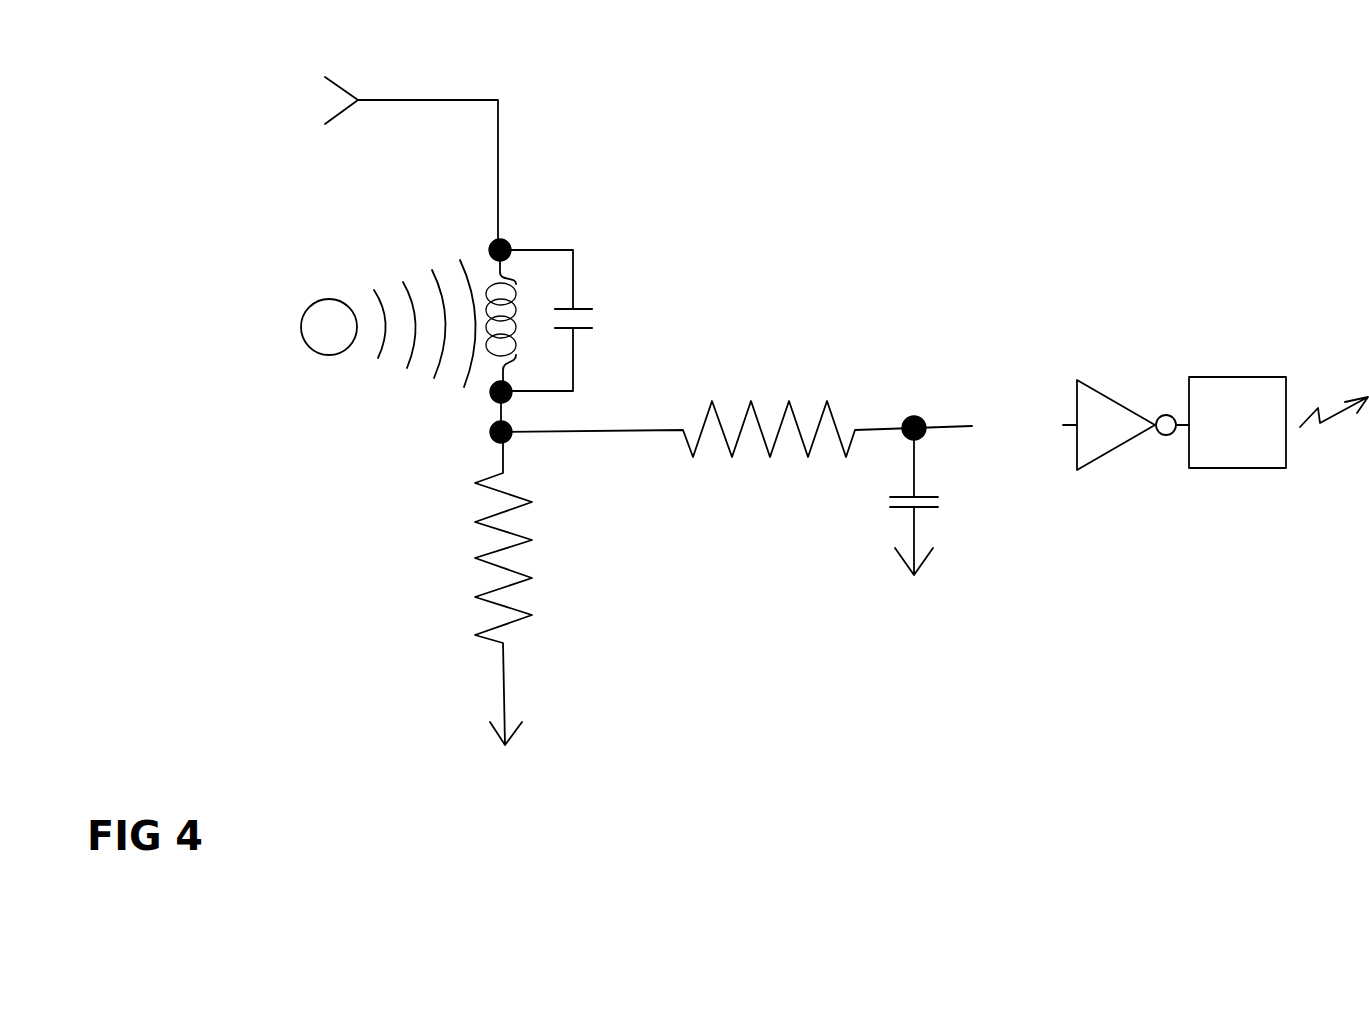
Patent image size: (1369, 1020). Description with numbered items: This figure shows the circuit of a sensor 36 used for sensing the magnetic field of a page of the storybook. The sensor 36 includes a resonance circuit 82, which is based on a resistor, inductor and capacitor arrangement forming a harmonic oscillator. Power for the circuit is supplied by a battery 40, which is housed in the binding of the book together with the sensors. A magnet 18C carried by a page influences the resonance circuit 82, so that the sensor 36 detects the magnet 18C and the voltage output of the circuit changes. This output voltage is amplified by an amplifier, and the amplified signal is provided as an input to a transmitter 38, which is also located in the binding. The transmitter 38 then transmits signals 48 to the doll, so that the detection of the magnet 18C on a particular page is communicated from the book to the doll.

The resonance circuit 82 is at (737, 404).
The sensor 36 is at (192, 135).
The battery 40 is at (395, 163).
The magnet 18C is at (388, 323).
The transmitter 38 is at (1243, 407).
The signals 48 is at (1334, 429).